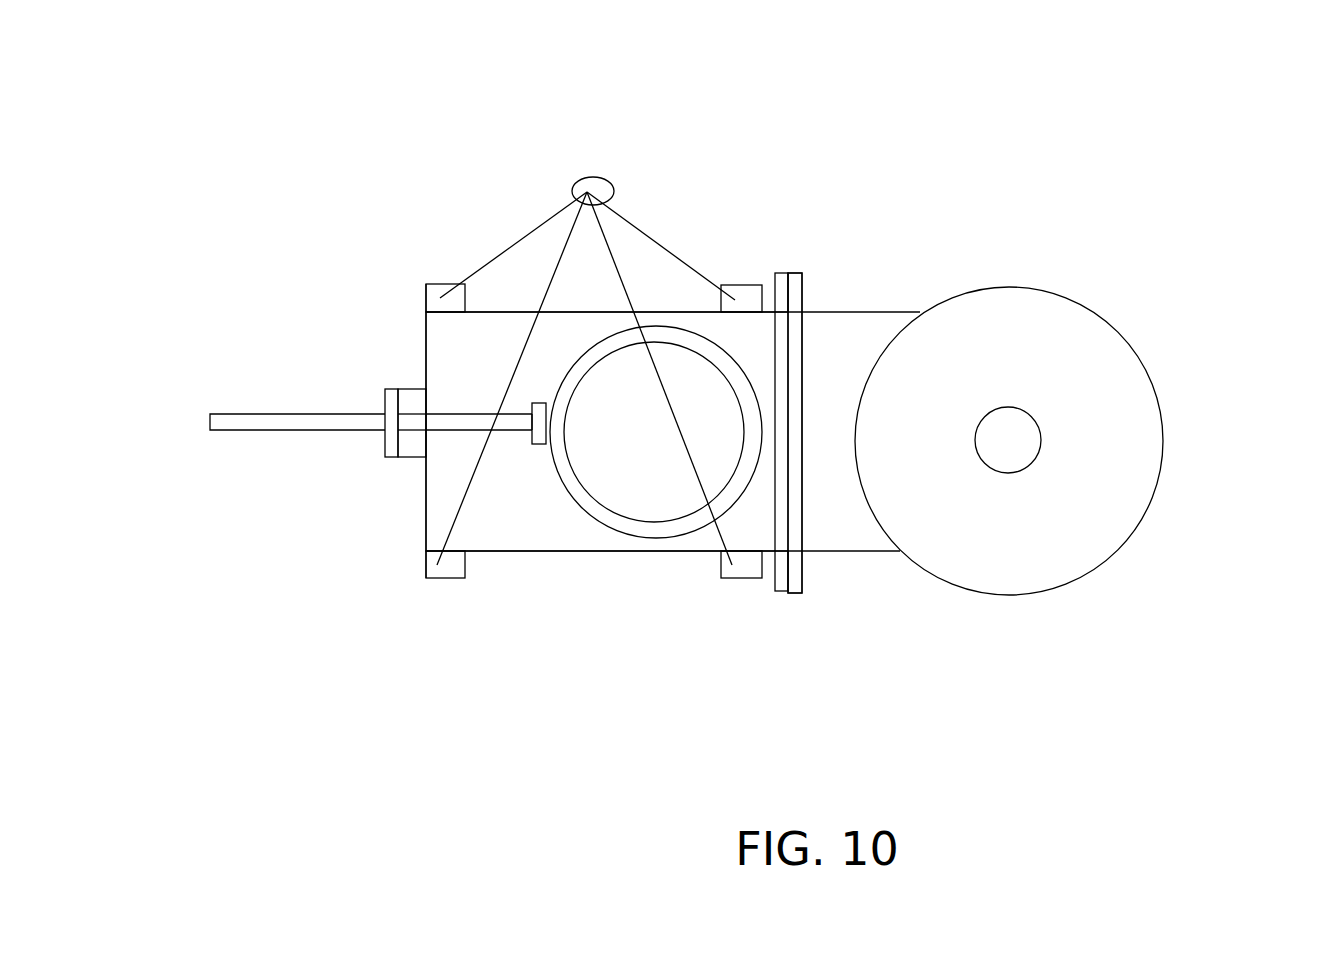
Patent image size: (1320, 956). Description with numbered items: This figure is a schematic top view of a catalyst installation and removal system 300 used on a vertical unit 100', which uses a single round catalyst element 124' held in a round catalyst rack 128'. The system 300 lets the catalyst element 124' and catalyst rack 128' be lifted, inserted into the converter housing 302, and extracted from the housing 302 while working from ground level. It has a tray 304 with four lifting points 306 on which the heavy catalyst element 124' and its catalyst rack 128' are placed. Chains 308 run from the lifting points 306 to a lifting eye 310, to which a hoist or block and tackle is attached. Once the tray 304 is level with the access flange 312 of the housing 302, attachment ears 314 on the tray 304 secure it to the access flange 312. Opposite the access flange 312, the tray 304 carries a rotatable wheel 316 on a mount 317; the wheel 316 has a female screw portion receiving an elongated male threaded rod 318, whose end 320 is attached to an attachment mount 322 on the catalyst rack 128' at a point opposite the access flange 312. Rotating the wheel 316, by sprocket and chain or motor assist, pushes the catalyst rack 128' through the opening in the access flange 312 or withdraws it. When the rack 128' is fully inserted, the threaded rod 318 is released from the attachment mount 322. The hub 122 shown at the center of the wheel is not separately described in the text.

The vertical unit 100' is at (1061, 409).
The hub 122 is at (1017, 407).
The catalyst element 124' is at (687, 529).
The catalyst rack 128' is at (656, 521).
The catalyst installation and removal system 300 is at (422, 184).
The converter housing 302 is at (842, 330).
The tray 304 is at (530, 523).
The lifting points 306 is at (451, 578).
The chains 308 is at (533, 227).
The lifting eye 310 is at (602, 193).
The access flange 312 is at (802, 565).
The attachment ears 314 is at (775, 283).
The rotatable wheel 316 is at (380, 447).
The mount 317 is at (413, 457).
The threaded rod 318 is at (276, 418).
The end 320 is at (518, 437).
The attachment mount 322 is at (533, 405).